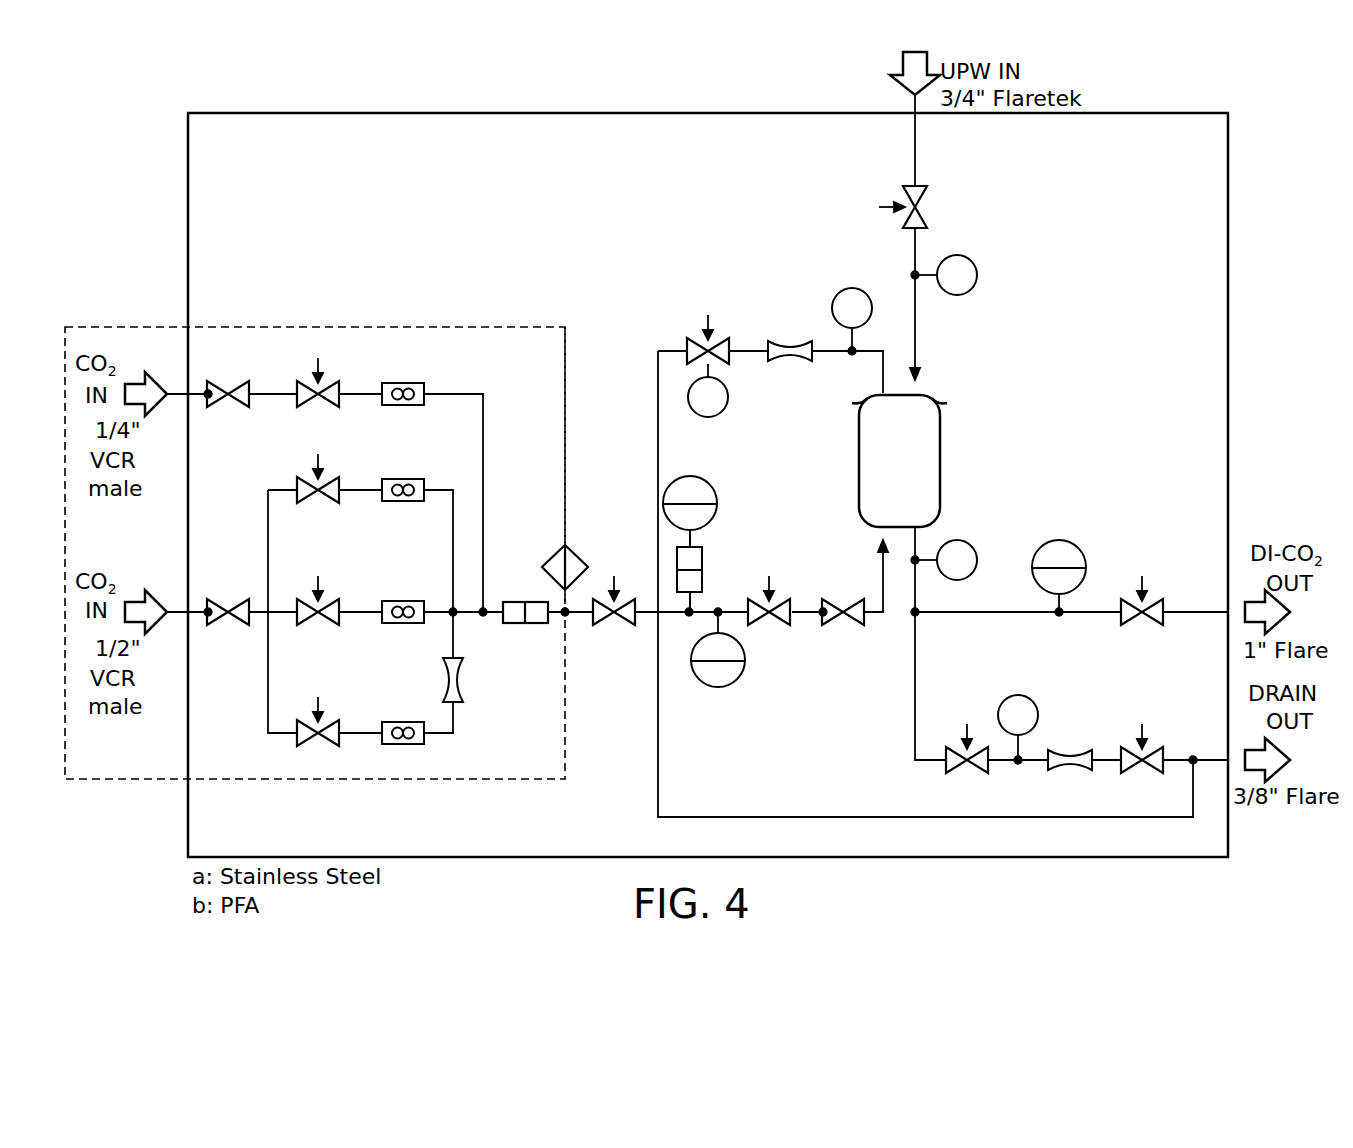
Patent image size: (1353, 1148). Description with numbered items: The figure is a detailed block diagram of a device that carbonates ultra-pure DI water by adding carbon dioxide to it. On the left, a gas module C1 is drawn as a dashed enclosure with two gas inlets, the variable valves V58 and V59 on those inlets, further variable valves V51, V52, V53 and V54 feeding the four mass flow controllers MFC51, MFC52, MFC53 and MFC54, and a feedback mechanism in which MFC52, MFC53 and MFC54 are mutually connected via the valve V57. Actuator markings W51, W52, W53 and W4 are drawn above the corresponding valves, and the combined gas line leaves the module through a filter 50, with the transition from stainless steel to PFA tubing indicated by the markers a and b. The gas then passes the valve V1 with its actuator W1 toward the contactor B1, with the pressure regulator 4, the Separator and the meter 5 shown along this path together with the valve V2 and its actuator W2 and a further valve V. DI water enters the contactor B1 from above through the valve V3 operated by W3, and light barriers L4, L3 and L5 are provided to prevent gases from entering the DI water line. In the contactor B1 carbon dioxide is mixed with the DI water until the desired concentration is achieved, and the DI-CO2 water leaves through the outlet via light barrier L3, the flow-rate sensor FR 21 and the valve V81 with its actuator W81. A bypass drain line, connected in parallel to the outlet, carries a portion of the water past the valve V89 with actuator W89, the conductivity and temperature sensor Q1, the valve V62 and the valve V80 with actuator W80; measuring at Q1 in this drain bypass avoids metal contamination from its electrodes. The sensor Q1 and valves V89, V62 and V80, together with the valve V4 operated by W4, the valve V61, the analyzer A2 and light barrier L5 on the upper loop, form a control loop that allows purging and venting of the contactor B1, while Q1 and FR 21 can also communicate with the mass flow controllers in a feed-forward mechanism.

The gas module C1 is at (315, 553).
The variable valve V58 is at (226, 405).
The variable valve V59 is at (226, 622).
The variable valve V51 is at (319, 403).
The variable valve V52 is at (337, 500).
The variable valve V53 is at (337, 622).
The variable valve V54 is at (337, 744).
The valve actuator W51 is at (321, 358).
The valve actuator W52 is at (321, 454).
The valve actuator W53 is at (317, 578).
The valve actuator W4 is at (513, 507).
The mass flow controller MFC51 is at (399, 379).
The mass flow controller MFC52 is at (399, 476).
The mass flow controller MFC53 is at (399, 598).
The mass flow controller MFC54 is at (392, 719).
The valve V57 is at (474, 680).
The filter 50 is at (511, 627).
The stainless steel section a is at (565, 578).
The PFA section b is at (573, 453).
The valve V1 is at (614, 622).
The valve actuator W1 is at (618, 579).
The valve V4 is at (719, 343).
The analyzer A2 is at (708, 390).
The valve V61 is at (792, 366).
The light barrier L5 is at (852, 321).
The pressure regulator PR4 4 is at (690, 503).
The separator Separator is at (697, 569).
The meter M5 5 is at (718, 650).
The valve V2 is at (769, 622).
The valve actuator W2 is at (771, 579).
The valve V is at (841, 622).
The contactor B1 is at (899, 461).
The valve V3 is at (930, 207).
The valve actuator W3 is at (874, 207).
The light barrier L4 is at (944, 275).
The light barrier L3 is at (944, 560).
The sensor FR21 21 is at (1059, 578).
The valve V81 is at (1143, 623).
The valve actuator W81 is at (1145, 579).
The valve V89 is at (966, 771).
The valve actuator W89 is at (967, 726).
The sensor Q1 is at (1018, 729).
The valve V62 is at (1070, 747).
The valve V80 is at (1143, 771).
The valve actuator W80 is at (1145, 726).